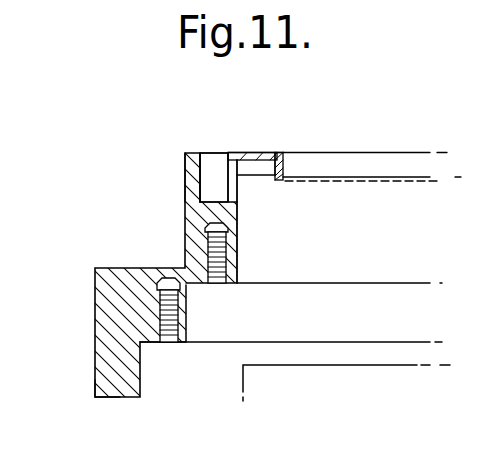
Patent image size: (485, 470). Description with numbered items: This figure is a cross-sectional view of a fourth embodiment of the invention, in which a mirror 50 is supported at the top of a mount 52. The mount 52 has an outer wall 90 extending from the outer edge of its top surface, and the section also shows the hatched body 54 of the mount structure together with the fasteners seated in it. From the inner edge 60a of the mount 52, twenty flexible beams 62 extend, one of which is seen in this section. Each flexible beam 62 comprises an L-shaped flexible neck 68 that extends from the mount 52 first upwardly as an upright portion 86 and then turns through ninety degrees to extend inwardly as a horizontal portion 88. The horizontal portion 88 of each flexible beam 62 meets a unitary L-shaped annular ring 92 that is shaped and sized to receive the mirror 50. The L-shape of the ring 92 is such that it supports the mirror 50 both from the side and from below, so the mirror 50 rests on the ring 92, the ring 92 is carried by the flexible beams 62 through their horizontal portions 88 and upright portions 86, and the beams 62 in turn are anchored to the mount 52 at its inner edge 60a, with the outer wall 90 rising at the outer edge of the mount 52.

The mirror 50 is at (408, 122).
The mount 52 is at (112, 401).
The clamping frame member 54 is at (103, 303).
The inner edge 60a is at (314, 225).
The flexible beam 62 is at (252, 150).
The L-shaped flexible neck 68 is at (222, 152).
The upright portion 86 is at (301, 200).
The horizontal portion 88 is at (252, 162).
The outer wall 90 is at (192, 173).
The L-shaped annular ring 92 is at (338, 122).